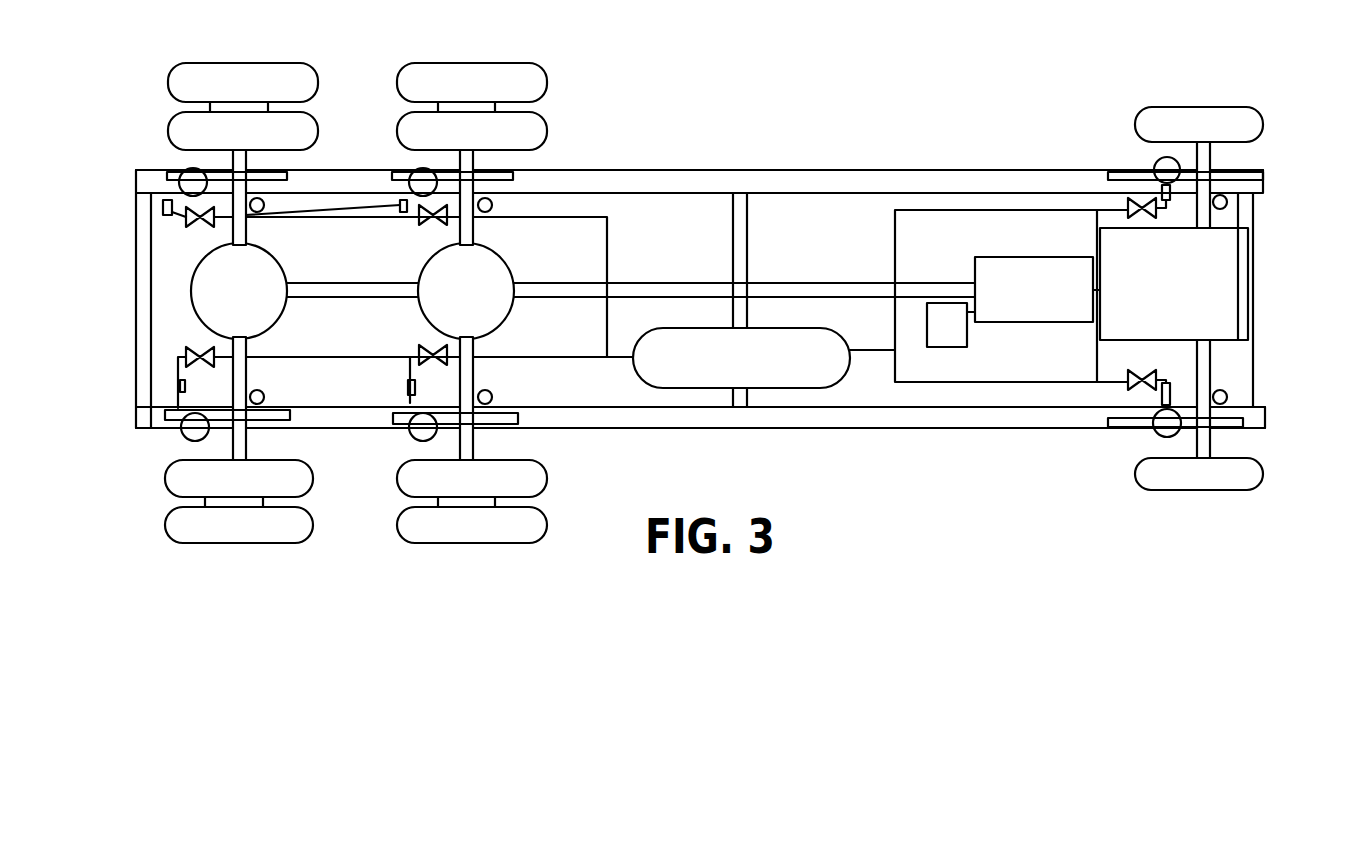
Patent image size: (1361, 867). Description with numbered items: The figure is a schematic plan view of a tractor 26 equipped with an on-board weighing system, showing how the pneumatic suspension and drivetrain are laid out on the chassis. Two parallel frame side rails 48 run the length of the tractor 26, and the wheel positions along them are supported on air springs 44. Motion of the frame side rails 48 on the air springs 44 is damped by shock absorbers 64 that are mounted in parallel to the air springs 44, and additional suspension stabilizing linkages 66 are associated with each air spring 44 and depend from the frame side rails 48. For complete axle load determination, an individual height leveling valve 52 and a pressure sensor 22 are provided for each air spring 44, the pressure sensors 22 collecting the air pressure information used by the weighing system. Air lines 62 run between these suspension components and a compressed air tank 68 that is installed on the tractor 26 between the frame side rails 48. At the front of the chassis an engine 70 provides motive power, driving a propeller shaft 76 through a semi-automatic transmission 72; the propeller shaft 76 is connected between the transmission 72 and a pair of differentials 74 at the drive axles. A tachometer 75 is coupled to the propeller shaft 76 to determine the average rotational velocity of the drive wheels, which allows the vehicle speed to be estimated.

The pressure sensor 22 is at (163, 208).
The tractor 26 is at (787, 92).
The air spring 44 is at (187, 187).
The frame side rail 48 is at (912, 177).
The height leveling valve 52 is at (188, 226).
The air line 62 is at (582, 360).
The shock absorber 64 is at (492, 208).
The suspension stabilizing linkage 66 is at (300, 168).
The compressed air tank 68 is at (813, 370).
The engine 70 is at (1174, 284).
The semi-automatic transmission 72 is at (990, 257).
The differential 74 is at (195, 320).
The tachometer 75 is at (967, 330).
The propeller shaft 76 is at (779, 283).